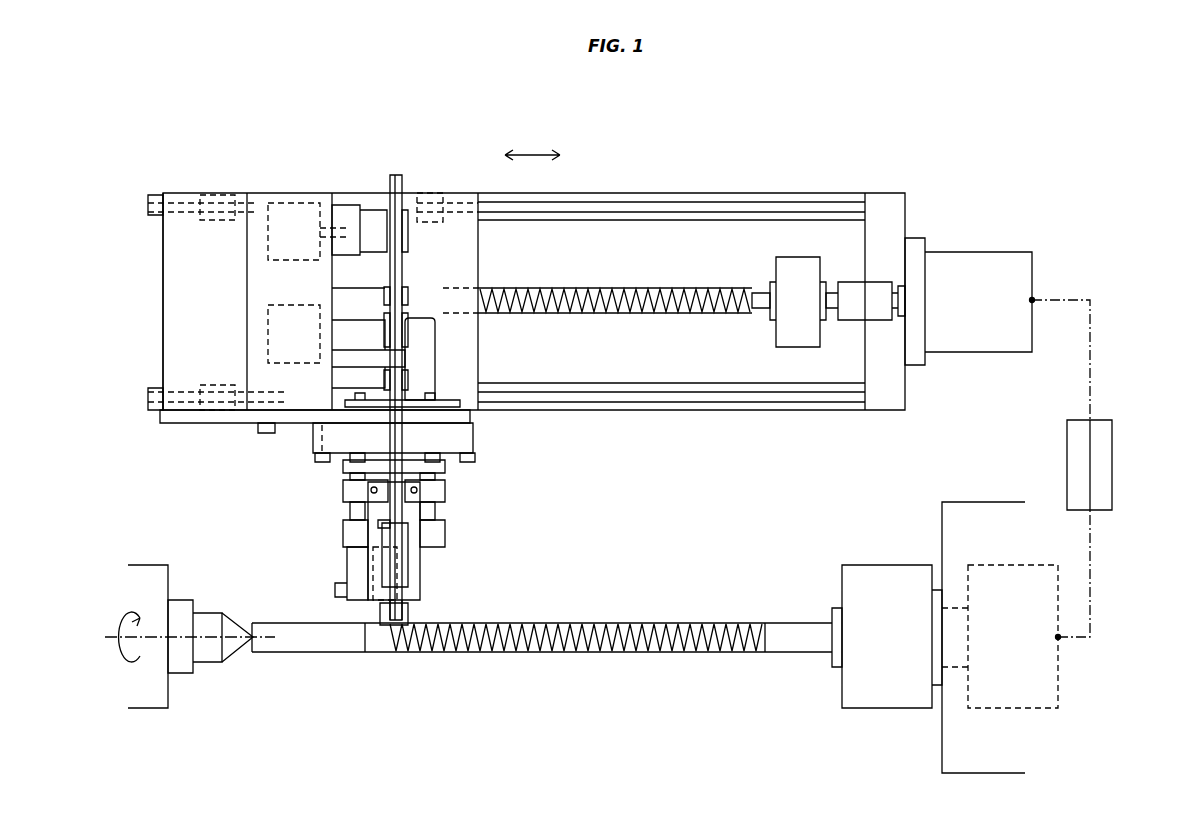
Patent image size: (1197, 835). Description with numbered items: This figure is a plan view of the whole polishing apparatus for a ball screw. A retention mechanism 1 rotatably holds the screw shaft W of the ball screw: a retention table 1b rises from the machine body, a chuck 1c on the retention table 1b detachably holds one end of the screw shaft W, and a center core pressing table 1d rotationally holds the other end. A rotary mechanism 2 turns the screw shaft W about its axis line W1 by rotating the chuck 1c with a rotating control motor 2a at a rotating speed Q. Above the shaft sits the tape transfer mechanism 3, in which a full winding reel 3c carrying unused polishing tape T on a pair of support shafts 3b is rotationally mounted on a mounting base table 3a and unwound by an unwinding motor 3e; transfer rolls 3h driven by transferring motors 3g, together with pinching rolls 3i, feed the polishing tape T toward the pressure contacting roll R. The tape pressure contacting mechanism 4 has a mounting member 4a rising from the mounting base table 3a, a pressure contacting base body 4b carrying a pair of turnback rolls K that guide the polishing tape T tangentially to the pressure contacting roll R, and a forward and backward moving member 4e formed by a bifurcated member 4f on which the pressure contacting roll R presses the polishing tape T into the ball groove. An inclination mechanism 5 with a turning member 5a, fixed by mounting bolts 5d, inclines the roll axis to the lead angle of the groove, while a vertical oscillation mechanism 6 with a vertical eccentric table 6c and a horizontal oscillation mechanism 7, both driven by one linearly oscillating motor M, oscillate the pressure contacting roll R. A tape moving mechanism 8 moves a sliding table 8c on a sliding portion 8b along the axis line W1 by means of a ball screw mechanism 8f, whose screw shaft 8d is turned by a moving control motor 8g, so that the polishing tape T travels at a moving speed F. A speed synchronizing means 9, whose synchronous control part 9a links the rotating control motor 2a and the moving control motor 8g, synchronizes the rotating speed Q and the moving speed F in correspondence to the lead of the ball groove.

The retention mechanism 1 is at (175, 733).
The retention table 1b is at (990, 510).
The chuck 1c is at (880, 575).
The center core pressing table 1d is at (138, 570).
The rotary mechanism 2 is at (858, 738).
The rotating control motor 2a is at (1060, 690).
The tape transfer mechanism 3 is at (452, 565).
The mounting base table 3a is at (298, 190).
The support shafts 3b is at (410, 233).
The full winding reel 3c is at (394, 288).
The unwinding motor 3e is at (290, 200).
The transferring motors 3g is at (268, 345).
The transfer rolls 3h is at (407, 300).
The pinching rolls 3i is at (386, 298).
The tape pressure contacting mechanism 4 is at (457, 531).
The mounting member 4a is at (424, 348).
The pressure contacting base body 4b is at (423, 600).
The forward and backward moving member 4e is at (358, 534).
The bifurcated member 4f is at (418, 567).
The inclination mechanism 5 is at (297, 462).
The turning member 5a is at (330, 437).
The mounting bolts 5d is at (348, 463).
The vertical oscillation mechanism 6 is at (458, 472).
The vertical eccentric table 6c is at (345, 468).
The horizontal oscillation mechanism 7 is at (457, 492).
The tape moving mechanism 8 is at (786, 434).
The sliding portion 8b is at (228, 192).
The sliding table 8c is at (178, 265).
The screw shaft 8d is at (652, 290).
The ball screw mechanism 8f is at (663, 337).
The moving control motor 8g is at (992, 276).
The speed synchronizing means 9 is at (1128, 495).
The synchronous control part 9a is at (1102, 458).
The moving speed F is at (532, 132).
The turnback rolls K is at (390, 640).
The linearly oscillating motor M is at (485, 440).
The rotating speed Q is at (128, 660).
The pressure contacting roll R is at (385, 553).
The polishing tape T is at (380, 526).
The screw shaft W is at (515, 652).
The axis line W1 is at (236, 642).